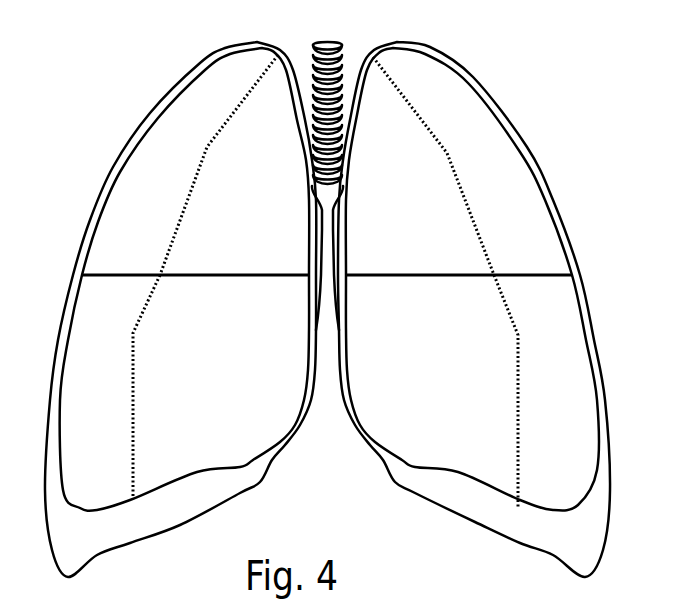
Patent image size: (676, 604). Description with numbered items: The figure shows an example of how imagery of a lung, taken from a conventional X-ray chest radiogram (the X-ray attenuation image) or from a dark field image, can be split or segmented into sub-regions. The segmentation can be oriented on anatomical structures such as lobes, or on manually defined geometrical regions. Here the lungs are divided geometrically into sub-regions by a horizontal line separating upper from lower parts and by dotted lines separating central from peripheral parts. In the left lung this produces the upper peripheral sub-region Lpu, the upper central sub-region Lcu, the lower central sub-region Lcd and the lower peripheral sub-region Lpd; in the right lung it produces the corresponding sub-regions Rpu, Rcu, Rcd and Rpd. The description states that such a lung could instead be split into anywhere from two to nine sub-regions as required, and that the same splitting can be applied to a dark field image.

The left peripheral upper lung region Lpu is at (195, 165).
The left central upper lung region Lcu is at (196, 238).
The right central upper lung region Rcu is at (458, 238).
The right peripheral upper lung region Rpu is at (456, 166).
The left peripheral lower lung region Lpd is at (116, 386).
The left central lower lung region Lcd is at (185, 279).
The right central lower lung region Rcd is at (472, 279).
The right peripheral lower lung region Rpd is at (539, 391).